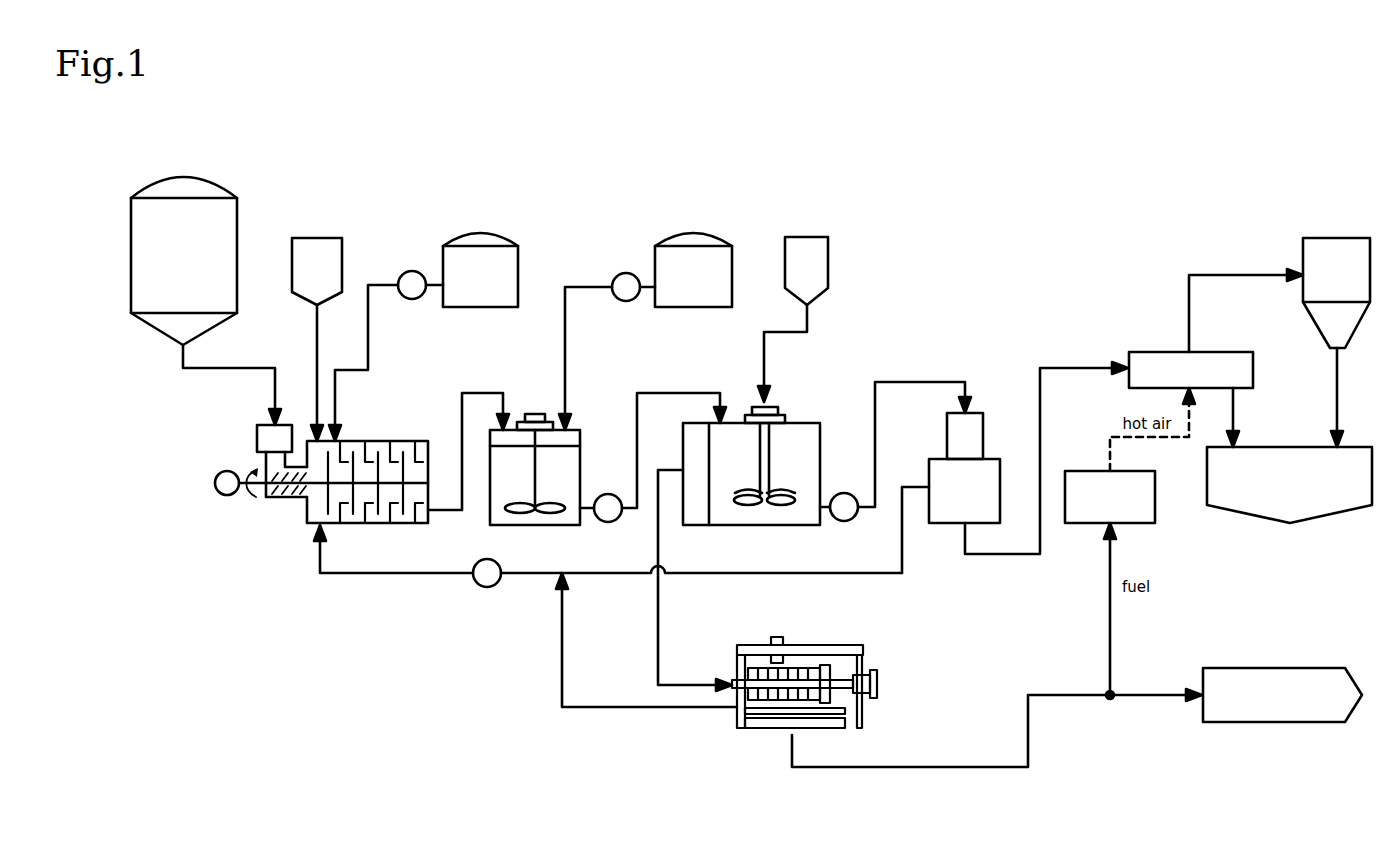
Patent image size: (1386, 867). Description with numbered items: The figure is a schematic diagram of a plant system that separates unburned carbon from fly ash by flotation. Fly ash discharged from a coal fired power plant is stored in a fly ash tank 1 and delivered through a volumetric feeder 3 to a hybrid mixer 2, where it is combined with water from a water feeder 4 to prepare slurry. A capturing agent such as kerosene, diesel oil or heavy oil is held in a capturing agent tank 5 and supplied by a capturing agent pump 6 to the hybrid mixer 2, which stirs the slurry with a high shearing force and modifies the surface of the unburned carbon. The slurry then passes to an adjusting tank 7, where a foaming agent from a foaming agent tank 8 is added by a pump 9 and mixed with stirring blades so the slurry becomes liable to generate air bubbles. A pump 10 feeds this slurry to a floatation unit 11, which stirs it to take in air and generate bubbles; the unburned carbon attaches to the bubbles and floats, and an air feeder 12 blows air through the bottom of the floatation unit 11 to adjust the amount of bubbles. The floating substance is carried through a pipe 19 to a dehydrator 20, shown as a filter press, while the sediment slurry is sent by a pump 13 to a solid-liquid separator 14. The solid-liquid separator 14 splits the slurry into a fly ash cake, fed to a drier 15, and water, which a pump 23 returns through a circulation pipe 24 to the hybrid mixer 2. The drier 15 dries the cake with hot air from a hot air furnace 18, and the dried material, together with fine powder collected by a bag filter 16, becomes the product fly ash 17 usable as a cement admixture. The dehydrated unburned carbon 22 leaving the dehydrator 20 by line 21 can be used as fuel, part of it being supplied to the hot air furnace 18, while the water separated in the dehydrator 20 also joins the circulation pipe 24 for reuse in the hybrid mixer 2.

The fly ash tank 1 is at (238, 190).
The hybrid mixer 2 is at (382, 441).
The volumetric feeder 3 is at (257, 432).
The water feeder 4 is at (317, 238).
The capturing agent tank 5 is at (500, 235).
The capturing agent pump 6 is at (412, 271).
The adjusting tank 7 is at (490, 510).
The foaming agent tank 8 is at (718, 235).
The pump 9 is at (626, 273).
The pump 10 is at (608, 494).
The floatation unit 11 is at (805, 423).
The air feeder 12 is at (810, 237).
The pump 13 is at (844, 493).
The solid-liquid separator 14 is at (975, 413).
The drier 15 is at (1140, 352).
The bag filter 16 is at (1303, 258).
The fly ash 17 is at (1320, 512).
The hot air furnace 18 is at (1155, 510).
The pipe 19 is at (658, 625).
The dehydrator 20 is at (863, 660).
The unburned carbon discharge line 21 is at (920, 767).
The unburned carbon 22 is at (1272, 668).
The pump 23 is at (487, 587).
The circulation pipe 24 is at (388, 573).